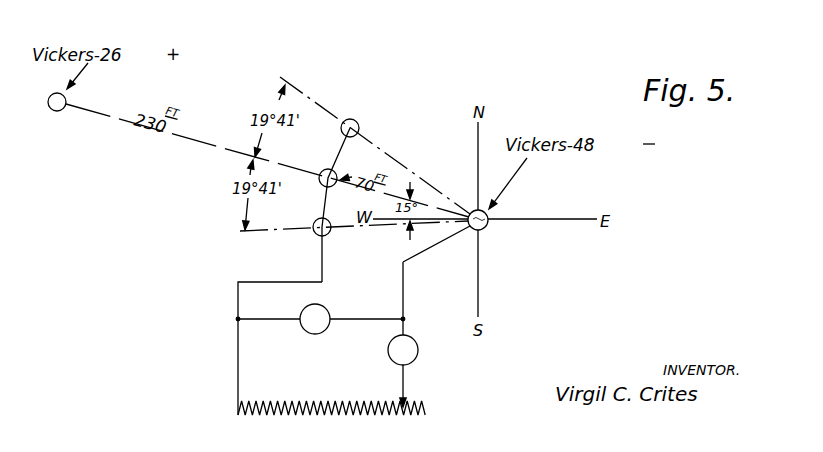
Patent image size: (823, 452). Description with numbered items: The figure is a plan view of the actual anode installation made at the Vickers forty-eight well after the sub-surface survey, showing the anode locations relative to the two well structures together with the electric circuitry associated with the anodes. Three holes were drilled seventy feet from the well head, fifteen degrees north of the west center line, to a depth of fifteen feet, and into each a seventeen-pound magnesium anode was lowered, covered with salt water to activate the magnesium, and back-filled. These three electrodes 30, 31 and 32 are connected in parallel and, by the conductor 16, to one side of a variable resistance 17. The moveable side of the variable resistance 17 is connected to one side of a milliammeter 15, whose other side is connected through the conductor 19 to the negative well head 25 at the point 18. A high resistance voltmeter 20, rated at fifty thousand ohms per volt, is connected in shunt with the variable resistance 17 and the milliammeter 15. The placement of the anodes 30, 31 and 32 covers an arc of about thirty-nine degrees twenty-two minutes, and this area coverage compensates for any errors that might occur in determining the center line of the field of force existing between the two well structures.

The milliammeter 15 is at (419, 354).
The conductor 16 is at (236, 332).
The variable resistance 17 is at (315, 416).
The point 18 is at (467, 231).
The conductor 19 is at (405, 293).
The high resistance voltmeter 20 is at (325, 306).
The negative well head 25 is at (498, 212).
The electrode 30 is at (360, 119).
The electrode 31 is at (327, 169).
The electrode 32 is at (315, 235).